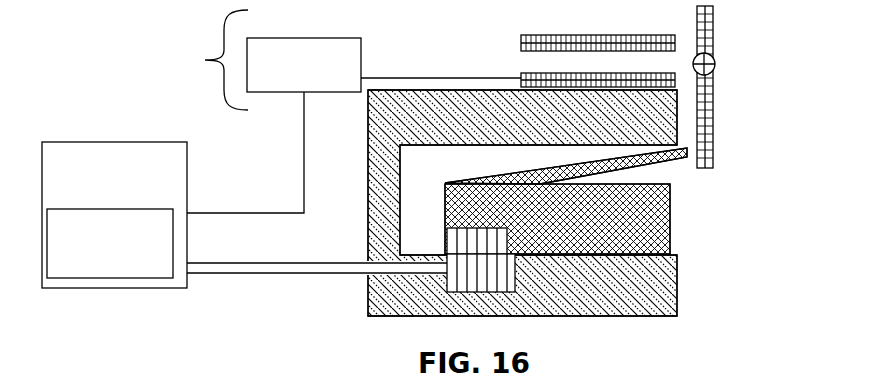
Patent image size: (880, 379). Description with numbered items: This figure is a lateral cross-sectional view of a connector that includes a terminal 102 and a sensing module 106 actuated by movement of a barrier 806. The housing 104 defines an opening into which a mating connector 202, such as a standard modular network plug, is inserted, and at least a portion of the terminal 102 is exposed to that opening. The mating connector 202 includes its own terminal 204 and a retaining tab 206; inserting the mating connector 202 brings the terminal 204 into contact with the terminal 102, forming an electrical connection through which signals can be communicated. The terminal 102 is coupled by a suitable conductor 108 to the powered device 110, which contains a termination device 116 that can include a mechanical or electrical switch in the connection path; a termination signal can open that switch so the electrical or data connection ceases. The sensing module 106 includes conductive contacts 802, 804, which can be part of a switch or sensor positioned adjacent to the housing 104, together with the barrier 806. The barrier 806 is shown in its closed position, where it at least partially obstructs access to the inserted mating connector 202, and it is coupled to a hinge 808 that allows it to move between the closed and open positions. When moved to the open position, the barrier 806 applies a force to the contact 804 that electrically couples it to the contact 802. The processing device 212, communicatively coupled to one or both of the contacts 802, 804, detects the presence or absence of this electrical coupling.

The terminal 102 is at (460, 295).
The housing 104 is at (440, 137).
The sensing module 106 is at (200, 60).
The conductor 108 is at (205, 258).
The powered device 110 is at (114, 215).
The termination device 116 is at (110, 243).
The mating connector 202 is at (672, 205).
The terminal 204 is at (442, 247).
The retaining tab 206 is at (660, 168).
The processing device 212 is at (304, 65).
The conductive contact 802 is at (516, 70).
The conductive contact 804 is at (540, 30).
The barrier 806 is at (716, 116).
The sensor 808 is at (718, 65).